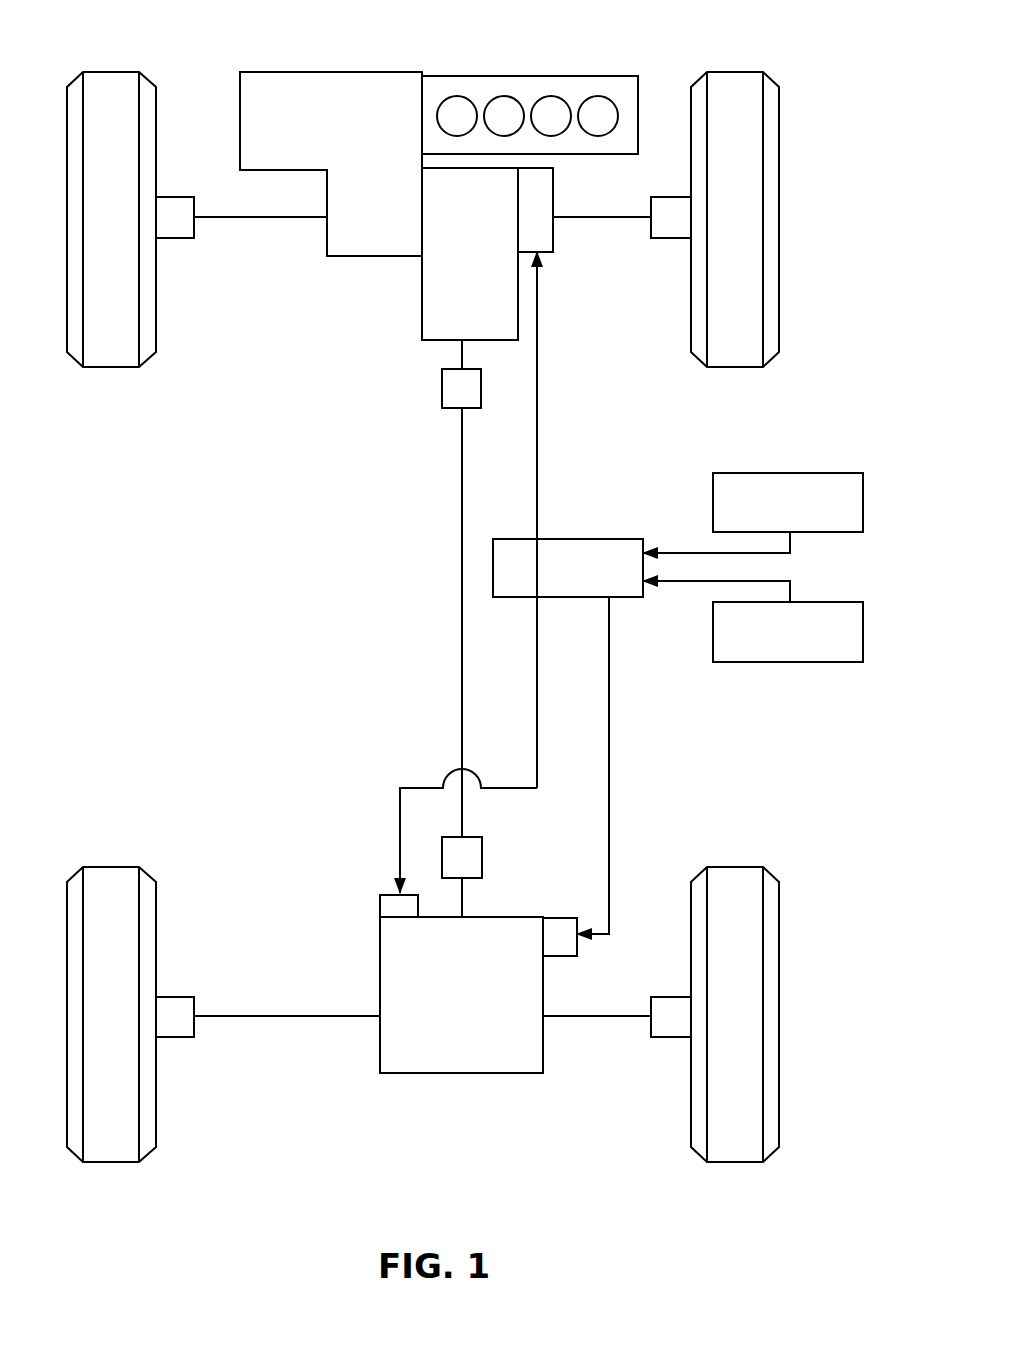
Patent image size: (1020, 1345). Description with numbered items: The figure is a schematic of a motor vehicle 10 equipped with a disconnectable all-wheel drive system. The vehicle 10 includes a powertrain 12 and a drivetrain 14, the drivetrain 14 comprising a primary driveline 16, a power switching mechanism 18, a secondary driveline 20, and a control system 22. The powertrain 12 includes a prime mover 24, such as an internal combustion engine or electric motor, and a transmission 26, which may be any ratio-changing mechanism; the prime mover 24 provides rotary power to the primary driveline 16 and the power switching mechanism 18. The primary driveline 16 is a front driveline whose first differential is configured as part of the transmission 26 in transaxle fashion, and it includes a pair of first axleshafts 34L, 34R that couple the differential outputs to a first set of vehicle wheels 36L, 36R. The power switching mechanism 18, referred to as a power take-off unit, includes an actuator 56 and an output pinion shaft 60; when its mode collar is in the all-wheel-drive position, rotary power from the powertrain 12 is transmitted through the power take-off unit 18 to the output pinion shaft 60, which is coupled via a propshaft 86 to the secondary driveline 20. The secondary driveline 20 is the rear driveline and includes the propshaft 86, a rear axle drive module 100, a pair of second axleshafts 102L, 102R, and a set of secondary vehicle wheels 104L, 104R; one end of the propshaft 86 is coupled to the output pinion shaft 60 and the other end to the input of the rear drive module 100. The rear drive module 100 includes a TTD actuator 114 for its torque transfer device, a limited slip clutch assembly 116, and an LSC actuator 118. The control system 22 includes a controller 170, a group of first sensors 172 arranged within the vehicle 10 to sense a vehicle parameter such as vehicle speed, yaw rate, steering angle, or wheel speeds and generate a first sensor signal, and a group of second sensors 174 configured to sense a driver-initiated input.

The vehicle 10 is at (125, 520).
The powertrain 12 is at (443, 399).
The drivetrain 14 is at (424, 877).
The primary driveline 16 is at (443, 399).
The power switching mechanism 18 is at (418, 312).
The secondary driveline 20 is at (494, 850).
The control system 22 is at (709, 570).
The prime mover 24 is at (622, 83).
The transmission 26 is at (308, 72).
The first axleshaft 34L is at (216, 217).
The first axleshaft 34R is at (607, 217).
The first vehicle wheel 36L is at (110, 80).
The first vehicle wheel 36R is at (732, 80).
The actuator 56 is at (546, 235).
The output pinion shaft 60 is at (458, 352).
The propshaft 86 is at (461, 488).
The rear axle drive module 100 is at (372, 942).
The second axleshaft 102L is at (253, 1016).
The second axleshaft 102R is at (597, 1016).
The secondary vehicle wheel 104L is at (108, 882).
The secondary vehicle wheel 104R is at (735, 886).
The TTD actuator 114 is at (390, 903).
The limited slip clutch assembly 116 is at (458, 895).
The LSC actuator 118 is at (558, 917).
The controller 170 is at (585, 537).
The first sensors 172 is at (788, 662).
The second sensors 174 is at (863, 498).